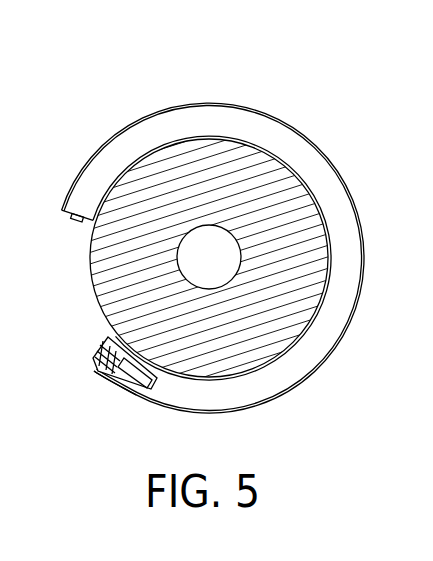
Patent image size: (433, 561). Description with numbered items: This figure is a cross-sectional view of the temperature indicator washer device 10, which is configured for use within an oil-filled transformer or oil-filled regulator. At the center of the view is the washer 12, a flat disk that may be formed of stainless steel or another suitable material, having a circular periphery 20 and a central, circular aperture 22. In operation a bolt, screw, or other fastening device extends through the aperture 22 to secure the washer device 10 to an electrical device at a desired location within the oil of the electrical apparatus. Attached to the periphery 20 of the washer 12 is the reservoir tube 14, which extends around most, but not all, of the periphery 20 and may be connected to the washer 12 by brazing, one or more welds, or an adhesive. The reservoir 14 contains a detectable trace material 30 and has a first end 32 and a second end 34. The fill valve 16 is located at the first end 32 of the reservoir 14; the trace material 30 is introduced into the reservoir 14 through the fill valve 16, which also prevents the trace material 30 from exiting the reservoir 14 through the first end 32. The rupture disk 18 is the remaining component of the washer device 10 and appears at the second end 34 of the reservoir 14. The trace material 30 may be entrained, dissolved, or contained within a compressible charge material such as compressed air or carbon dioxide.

The temperature indicator washer device 10 is at (156, 84).
The washer 12 is at (285, 208).
The reservoir tube 14 is at (293, 385).
The fill valve 16 is at (100, 350).
The rupture disk 18 is at (79, 219).
The circular periphery 20 is at (92, 283).
The central circular aperture 22 is at (219, 261).
The detectable trace material 30 is at (263, 133).
The first end of the reservoir 32 is at (100, 403).
The second end of the reservoir 34 is at (67, 207).